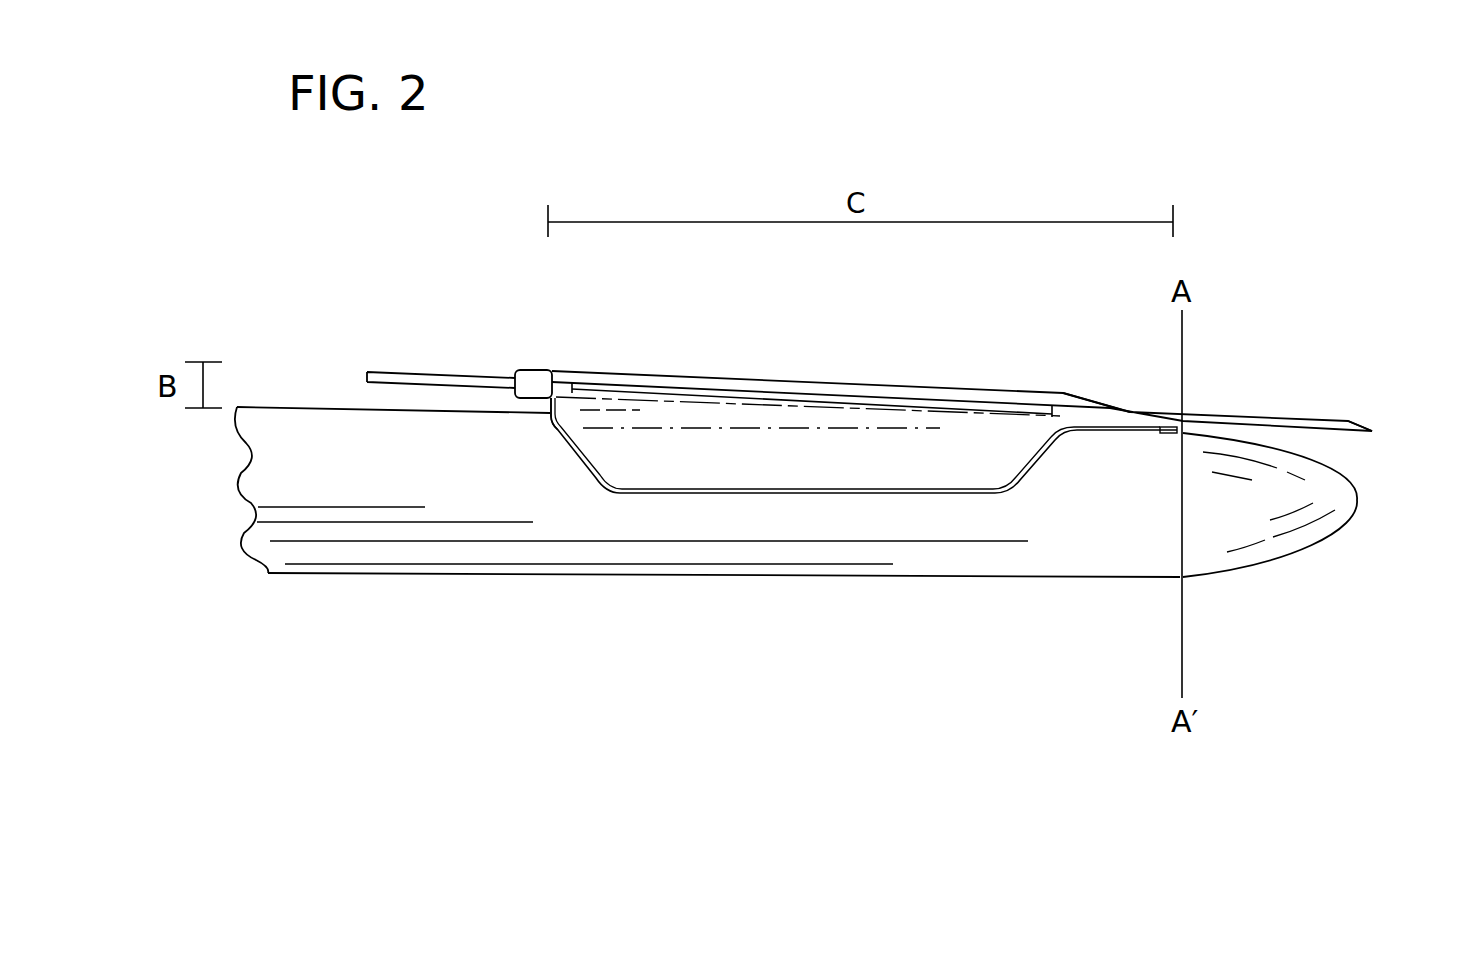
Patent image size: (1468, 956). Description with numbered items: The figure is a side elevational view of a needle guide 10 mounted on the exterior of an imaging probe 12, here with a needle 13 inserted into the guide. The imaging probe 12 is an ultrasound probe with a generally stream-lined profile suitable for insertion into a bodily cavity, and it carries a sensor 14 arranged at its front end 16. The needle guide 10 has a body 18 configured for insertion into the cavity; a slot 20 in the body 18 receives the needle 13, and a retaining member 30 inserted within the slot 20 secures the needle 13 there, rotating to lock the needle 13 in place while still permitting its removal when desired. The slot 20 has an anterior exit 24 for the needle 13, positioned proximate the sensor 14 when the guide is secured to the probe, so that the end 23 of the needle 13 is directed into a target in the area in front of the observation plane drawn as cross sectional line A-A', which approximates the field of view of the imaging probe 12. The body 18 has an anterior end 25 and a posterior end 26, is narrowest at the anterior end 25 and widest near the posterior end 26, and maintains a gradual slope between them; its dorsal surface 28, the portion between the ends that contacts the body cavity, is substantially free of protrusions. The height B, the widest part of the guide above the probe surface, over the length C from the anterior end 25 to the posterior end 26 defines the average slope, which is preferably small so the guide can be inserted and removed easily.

The needle guide 10 is at (725, 368).
The imaging probe 12 is at (793, 520).
The needle 13 is at (403, 372).
The sensor 14 is at (1243, 523).
The front end 16 is at (1358, 507).
The body 18 is at (800, 468).
The slot 20 is at (813, 400).
The end of the needle 23 is at (1362, 427).
The anterior exit 24 is at (1098, 410).
The anterior end 25 is at (1180, 433).
The posterior end 26 is at (550, 415).
The dorsal surface 28 is at (923, 393).
The retaining member 30 is at (527, 380).